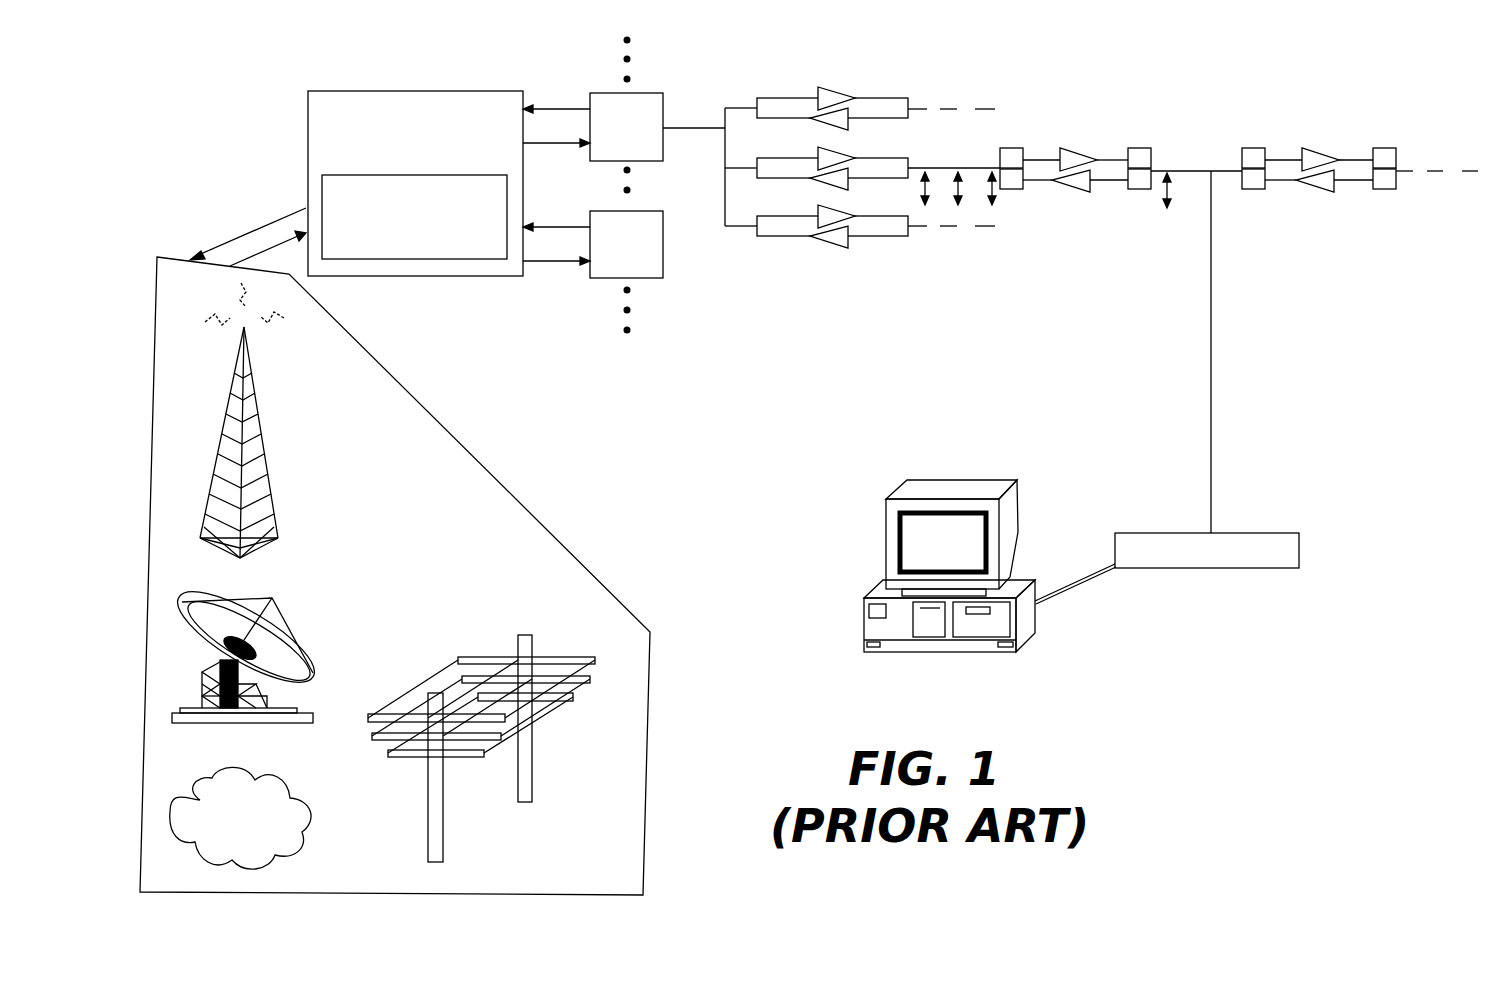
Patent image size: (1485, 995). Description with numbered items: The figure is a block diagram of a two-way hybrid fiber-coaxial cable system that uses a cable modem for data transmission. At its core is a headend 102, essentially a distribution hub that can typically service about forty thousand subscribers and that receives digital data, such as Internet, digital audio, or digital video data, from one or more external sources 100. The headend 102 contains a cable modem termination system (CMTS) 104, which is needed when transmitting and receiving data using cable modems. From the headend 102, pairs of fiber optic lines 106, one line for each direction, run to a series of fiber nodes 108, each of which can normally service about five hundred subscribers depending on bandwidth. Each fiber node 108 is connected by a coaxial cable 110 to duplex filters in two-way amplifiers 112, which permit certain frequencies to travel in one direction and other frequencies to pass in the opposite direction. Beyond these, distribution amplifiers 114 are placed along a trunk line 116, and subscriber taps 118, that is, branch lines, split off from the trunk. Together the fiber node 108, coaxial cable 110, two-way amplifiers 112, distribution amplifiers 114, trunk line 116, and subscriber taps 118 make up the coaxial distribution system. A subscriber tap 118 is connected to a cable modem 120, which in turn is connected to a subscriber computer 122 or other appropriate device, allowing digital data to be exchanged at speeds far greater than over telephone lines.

The external sources 100 is at (170, 250).
The headend 102 is at (516, 91).
The cable modem termination system (CMTS) 104 is at (415, 262).
The fiber optic lines 106 is at (547, 232).
The fiber nodes 108 is at (661, 280).
The coaxial cable 110 is at (693, 128).
The duplex filters / two-way amplifiers 112 is at (785, 238).
The distribution amplifiers 114 is at (1072, 193).
The trunk line 116 is at (1190, 171).
The subscriber tap 118 is at (1211, 346).
The cable modem 120 is at (1268, 533).
The subscriber computer 122 is at (886, 510).